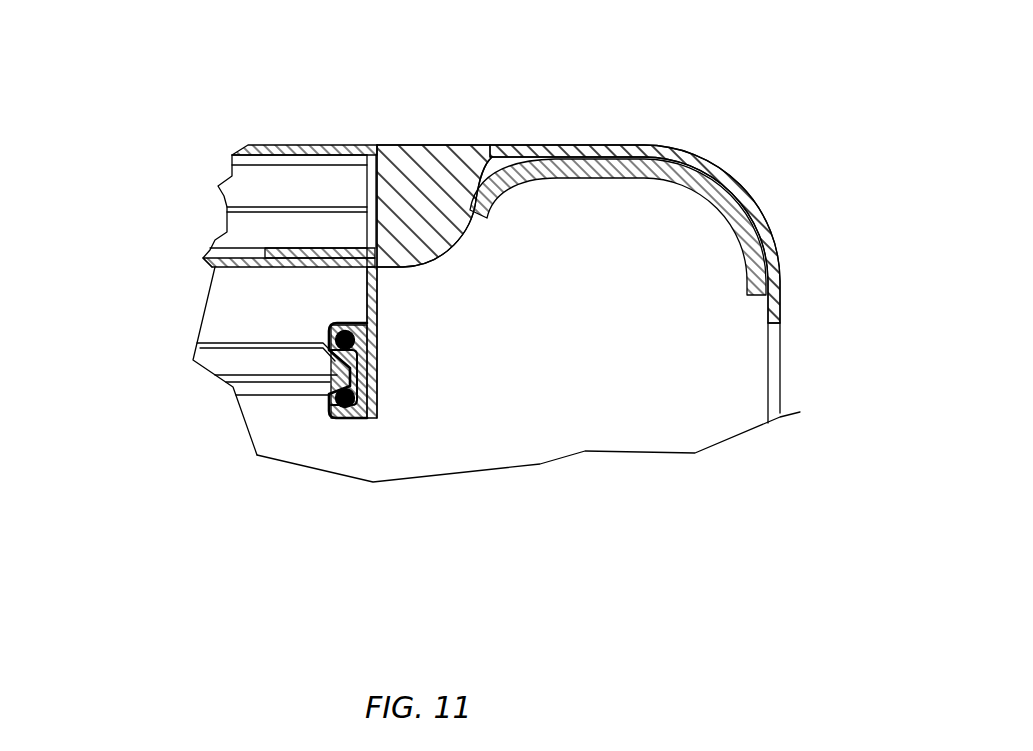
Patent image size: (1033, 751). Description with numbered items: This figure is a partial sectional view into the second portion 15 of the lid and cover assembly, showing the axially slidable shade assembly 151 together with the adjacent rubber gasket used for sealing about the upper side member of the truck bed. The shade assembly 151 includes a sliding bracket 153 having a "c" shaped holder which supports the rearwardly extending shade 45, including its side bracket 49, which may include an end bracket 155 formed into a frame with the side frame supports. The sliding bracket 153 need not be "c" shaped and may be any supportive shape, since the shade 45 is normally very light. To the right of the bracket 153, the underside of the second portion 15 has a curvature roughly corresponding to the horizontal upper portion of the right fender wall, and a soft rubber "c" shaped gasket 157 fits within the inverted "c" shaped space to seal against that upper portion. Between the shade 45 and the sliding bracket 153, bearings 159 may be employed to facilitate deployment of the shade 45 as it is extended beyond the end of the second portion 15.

The second portion 15 is at (475, 145).
The "c" shaped gasket 157 is at (712, 182).
The end bracket 155 is at (222, 361).
The rearwardly extending shade 45 is at (267, 398).
The side frame support 49 is at (363, 368).
The axially slidable shade assembly 151 is at (352, 435).
The sliding bracket 153 is at (380, 412).
The bearings 159 is at (330, 410).